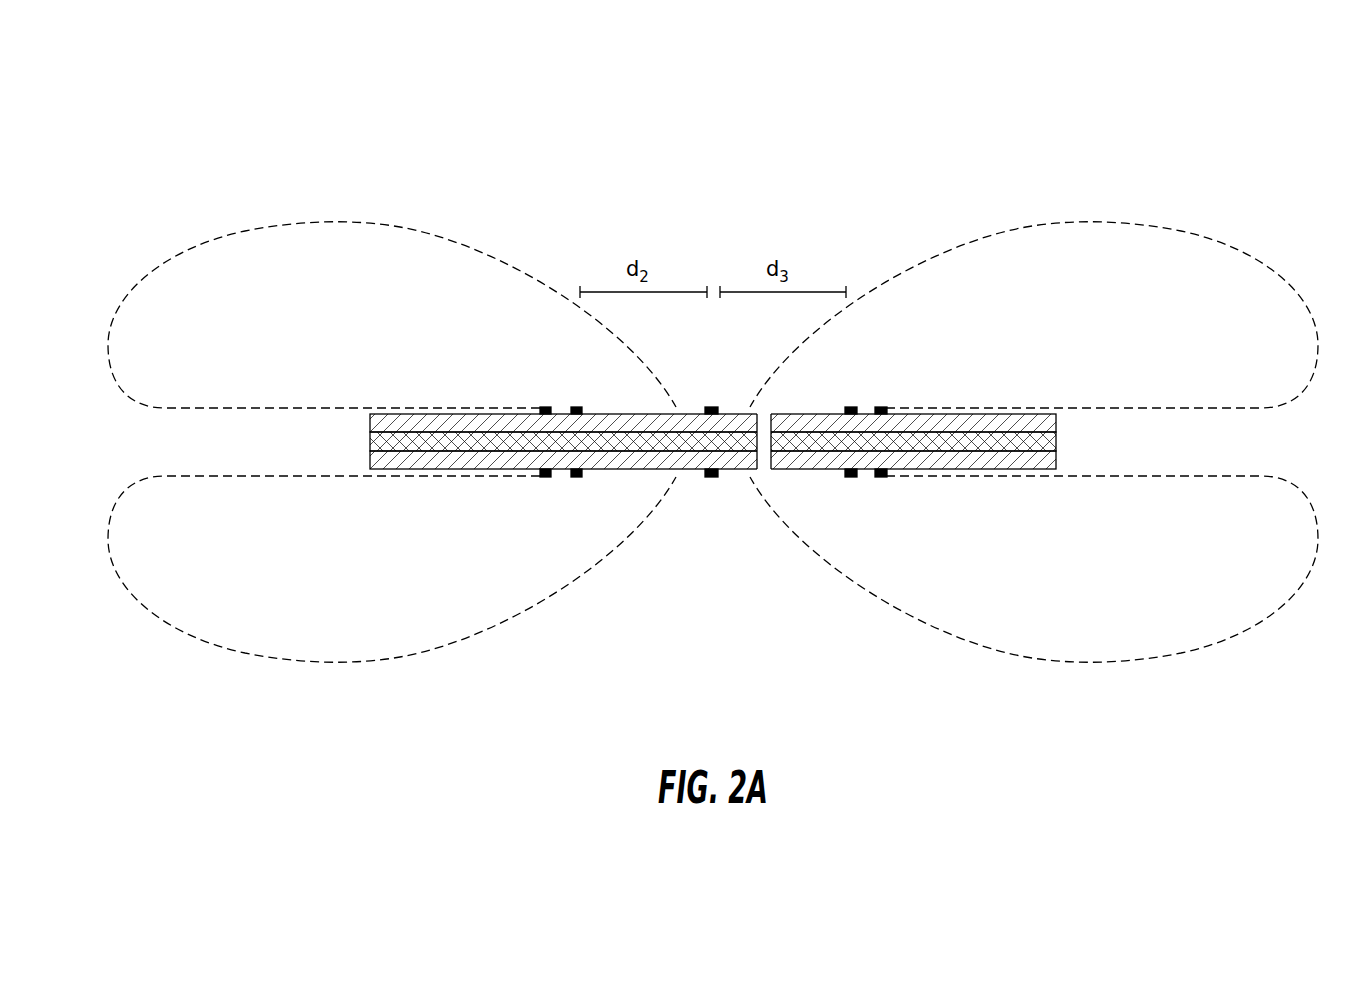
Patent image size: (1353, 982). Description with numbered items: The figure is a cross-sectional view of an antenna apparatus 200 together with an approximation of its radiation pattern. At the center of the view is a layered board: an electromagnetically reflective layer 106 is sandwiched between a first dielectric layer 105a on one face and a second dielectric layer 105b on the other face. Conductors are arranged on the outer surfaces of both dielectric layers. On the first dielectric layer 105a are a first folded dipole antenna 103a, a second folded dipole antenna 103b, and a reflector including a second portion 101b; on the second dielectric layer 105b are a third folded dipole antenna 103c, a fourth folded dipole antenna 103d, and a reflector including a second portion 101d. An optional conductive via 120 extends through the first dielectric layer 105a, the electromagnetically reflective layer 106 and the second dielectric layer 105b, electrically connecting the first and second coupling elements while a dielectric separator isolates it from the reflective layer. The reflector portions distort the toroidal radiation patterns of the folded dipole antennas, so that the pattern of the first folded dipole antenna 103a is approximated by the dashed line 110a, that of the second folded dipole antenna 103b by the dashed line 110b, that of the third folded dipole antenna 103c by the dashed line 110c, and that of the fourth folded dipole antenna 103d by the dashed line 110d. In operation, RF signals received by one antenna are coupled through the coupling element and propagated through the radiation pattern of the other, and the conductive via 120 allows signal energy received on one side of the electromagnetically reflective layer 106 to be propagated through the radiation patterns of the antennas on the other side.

The antenna apparatus 200 is at (1113, 132).
The second portion of the reflector 101b is at (713, 407).
The second portion of the reflector 101d is at (713, 477).
The first folded dipole antenna 103a is at (577, 407).
The second folded dipole antenna 103b is at (881, 407).
The third folded dipole antenna 103c is at (577, 477).
The fourth folded dipole antenna 103d is at (881, 477).
The first dielectric layer 105a is at (1056, 424).
The second dielectric layer 105b is at (1056, 460).
The electromagnetically reflective layer 106 is at (1056, 440).
The dashed line 110a is at (200, 242).
The dashed line 110b is at (1226, 242).
The dashed line 110c is at (200, 642).
The dashed line 110d is at (1226, 642).
The conductive via 120 is at (780, 413).